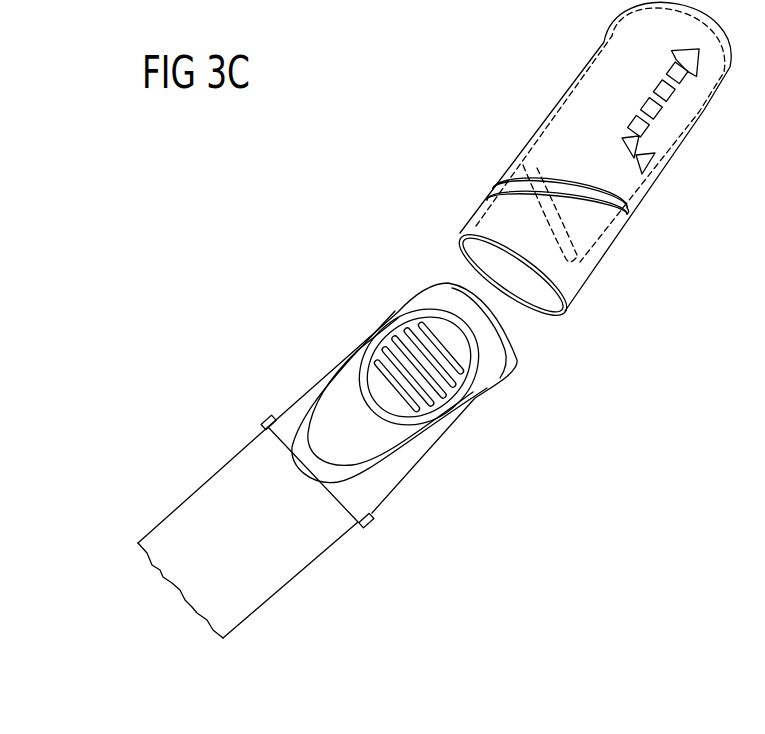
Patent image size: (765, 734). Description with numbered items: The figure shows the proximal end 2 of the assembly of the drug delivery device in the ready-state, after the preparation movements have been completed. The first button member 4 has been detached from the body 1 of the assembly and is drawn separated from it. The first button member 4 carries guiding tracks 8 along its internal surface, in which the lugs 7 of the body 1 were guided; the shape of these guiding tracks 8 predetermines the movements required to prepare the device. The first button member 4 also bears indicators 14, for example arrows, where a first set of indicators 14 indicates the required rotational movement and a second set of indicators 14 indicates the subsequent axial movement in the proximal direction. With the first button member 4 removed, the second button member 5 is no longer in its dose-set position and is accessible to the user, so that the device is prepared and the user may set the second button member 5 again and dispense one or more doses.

The body 1 is at (217, 483).
The proximal end 2 is at (516, 257).
The first button member 4 is at (607, 165).
The second button member 5 is at (496, 366).
The lugs 7 is at (365, 527).
The guiding tracks 8 is at (587, 192).
The indicators 14 is at (677, 104).